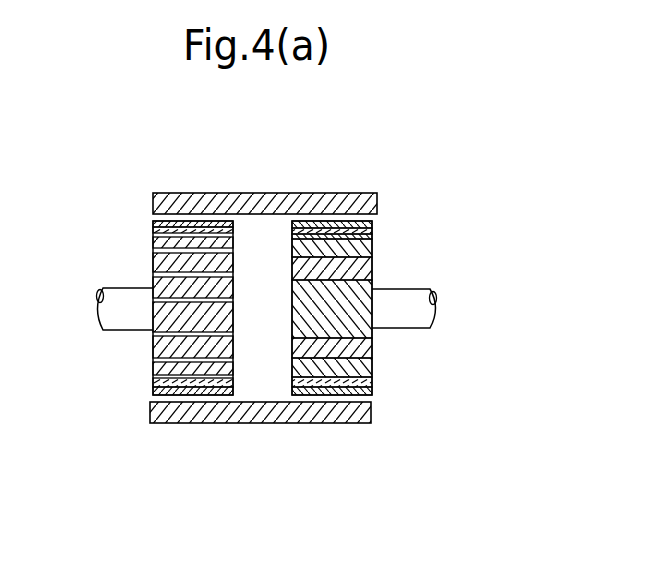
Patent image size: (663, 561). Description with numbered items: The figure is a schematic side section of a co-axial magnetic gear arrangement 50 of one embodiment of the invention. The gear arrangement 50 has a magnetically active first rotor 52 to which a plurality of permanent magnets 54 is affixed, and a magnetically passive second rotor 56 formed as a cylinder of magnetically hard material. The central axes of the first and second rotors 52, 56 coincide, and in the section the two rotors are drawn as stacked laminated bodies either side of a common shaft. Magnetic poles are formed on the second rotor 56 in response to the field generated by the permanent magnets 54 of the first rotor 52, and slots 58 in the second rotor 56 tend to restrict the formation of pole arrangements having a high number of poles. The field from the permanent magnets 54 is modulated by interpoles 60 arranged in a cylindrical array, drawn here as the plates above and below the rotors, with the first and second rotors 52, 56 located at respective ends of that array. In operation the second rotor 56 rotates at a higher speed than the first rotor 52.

The gear arrangement 50 is at (124, 173).
The first rotor 52 is at (352, 352).
The permanent magnets 54 is at (357, 370).
The second rotor 56 is at (153, 257).
The slots 58 is at (152, 335).
The interpoles 60 is at (160, 409).